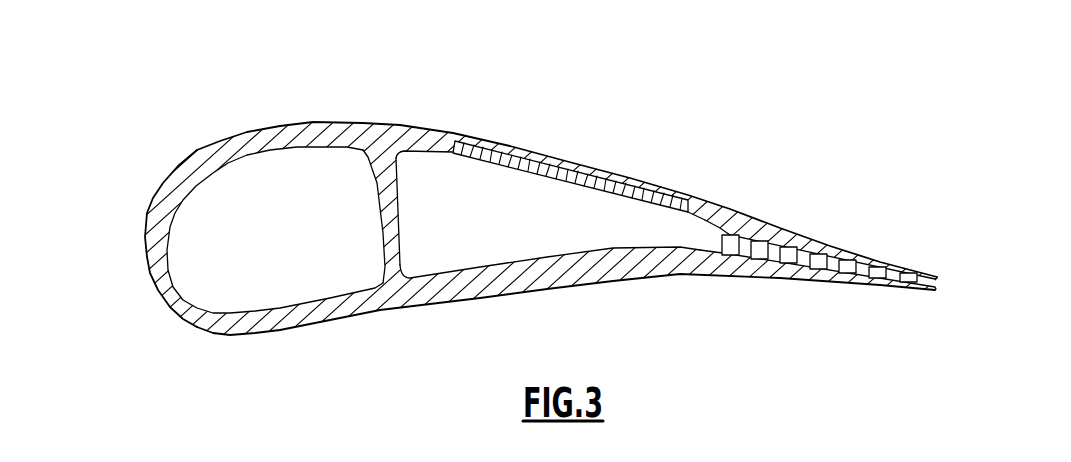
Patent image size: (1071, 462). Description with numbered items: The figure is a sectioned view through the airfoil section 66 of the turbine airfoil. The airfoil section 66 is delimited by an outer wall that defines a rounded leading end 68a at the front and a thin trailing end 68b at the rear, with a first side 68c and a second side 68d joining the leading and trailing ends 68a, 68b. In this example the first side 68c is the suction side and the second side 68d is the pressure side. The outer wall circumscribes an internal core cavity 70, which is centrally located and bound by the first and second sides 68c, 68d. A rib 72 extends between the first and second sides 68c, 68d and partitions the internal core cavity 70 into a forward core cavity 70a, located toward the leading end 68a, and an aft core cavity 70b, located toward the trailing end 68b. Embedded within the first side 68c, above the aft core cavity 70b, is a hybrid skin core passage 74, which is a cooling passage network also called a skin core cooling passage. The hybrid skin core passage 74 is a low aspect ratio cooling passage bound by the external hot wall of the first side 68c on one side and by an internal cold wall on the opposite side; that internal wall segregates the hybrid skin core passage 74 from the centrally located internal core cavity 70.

The airfoil section 66 is at (535, 231).
The leading end 68a is at (138, 284).
The trailing end 68b is at (934, 307).
The first side 68c is at (363, 122).
The second side 68d is at (355, 317).
The internal core cavity 70 is at (436, 236).
The forward core cavity 70a is at (277, 247).
The aft core cavity 70b is at (513, 229).
The rib 72 is at (375, 226).
The hybrid skin core passage 74 is at (567, 168).